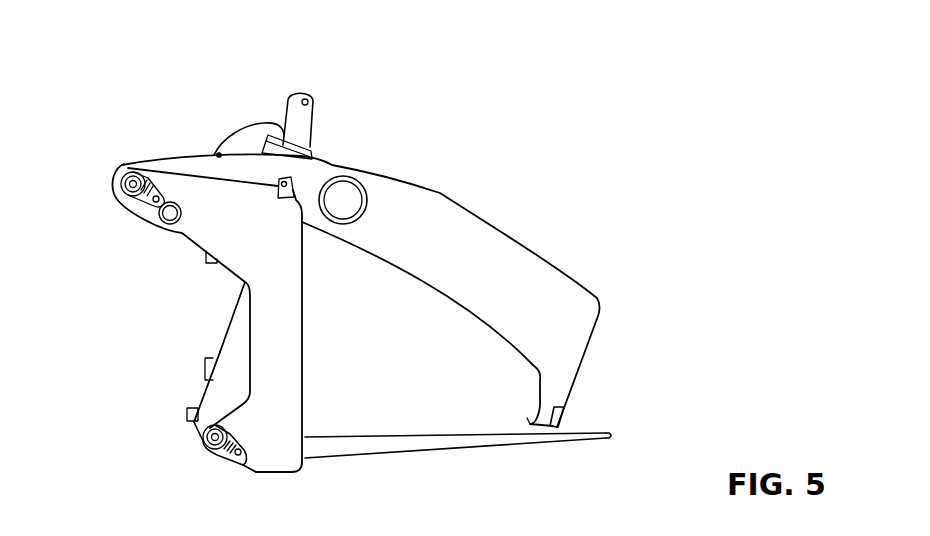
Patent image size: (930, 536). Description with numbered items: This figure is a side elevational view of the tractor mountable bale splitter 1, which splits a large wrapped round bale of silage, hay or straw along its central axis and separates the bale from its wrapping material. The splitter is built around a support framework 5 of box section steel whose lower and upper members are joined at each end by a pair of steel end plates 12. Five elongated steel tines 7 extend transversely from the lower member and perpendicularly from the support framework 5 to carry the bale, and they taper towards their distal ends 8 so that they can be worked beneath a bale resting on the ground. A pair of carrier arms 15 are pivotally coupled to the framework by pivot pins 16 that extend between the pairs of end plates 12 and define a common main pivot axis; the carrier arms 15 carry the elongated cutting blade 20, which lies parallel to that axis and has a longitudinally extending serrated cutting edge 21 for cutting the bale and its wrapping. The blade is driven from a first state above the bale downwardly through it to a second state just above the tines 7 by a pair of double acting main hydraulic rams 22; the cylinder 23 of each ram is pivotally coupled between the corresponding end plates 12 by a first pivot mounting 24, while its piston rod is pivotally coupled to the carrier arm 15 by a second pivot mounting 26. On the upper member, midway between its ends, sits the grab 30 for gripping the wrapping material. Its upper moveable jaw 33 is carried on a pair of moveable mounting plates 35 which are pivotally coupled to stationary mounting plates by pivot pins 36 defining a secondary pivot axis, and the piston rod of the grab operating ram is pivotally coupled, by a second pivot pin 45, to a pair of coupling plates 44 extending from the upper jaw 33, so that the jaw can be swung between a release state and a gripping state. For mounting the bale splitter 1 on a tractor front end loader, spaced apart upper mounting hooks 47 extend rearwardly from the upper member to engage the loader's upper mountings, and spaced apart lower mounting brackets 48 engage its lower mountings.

The bale splitter 1 is at (152, 449).
The support framework 5 is at (258, 303).
The tines 7 is at (418, 443).
The distal ends 8 is at (613, 433).
The end plates 12 is at (292, 344).
The carrier arms 15 is at (503, 247).
The pivot pins 16 is at (125, 177).
The cutting blade 20 is at (563, 418).
The serrated cutting edge 21 is at (540, 425).
The main hydraulic rams 22 is at (230, 332).
The cylinder 23 is at (220, 377).
The first pivot mounting 24 is at (203, 447).
The second pivot mounting 26 is at (326, 165).
The grab 30 is at (325, 133).
The upper moveable jaw 33 is at (312, 159).
The moveable mounting plates 35 is at (253, 138).
The pivot pins 36 is at (219, 153).
The coupling plates 44 is at (311, 121).
The second pivot pin 45 is at (305, 98).
The upper mounting hooks 47 is at (202, 255).
The lower mounting brackets 48 is at (206, 360).